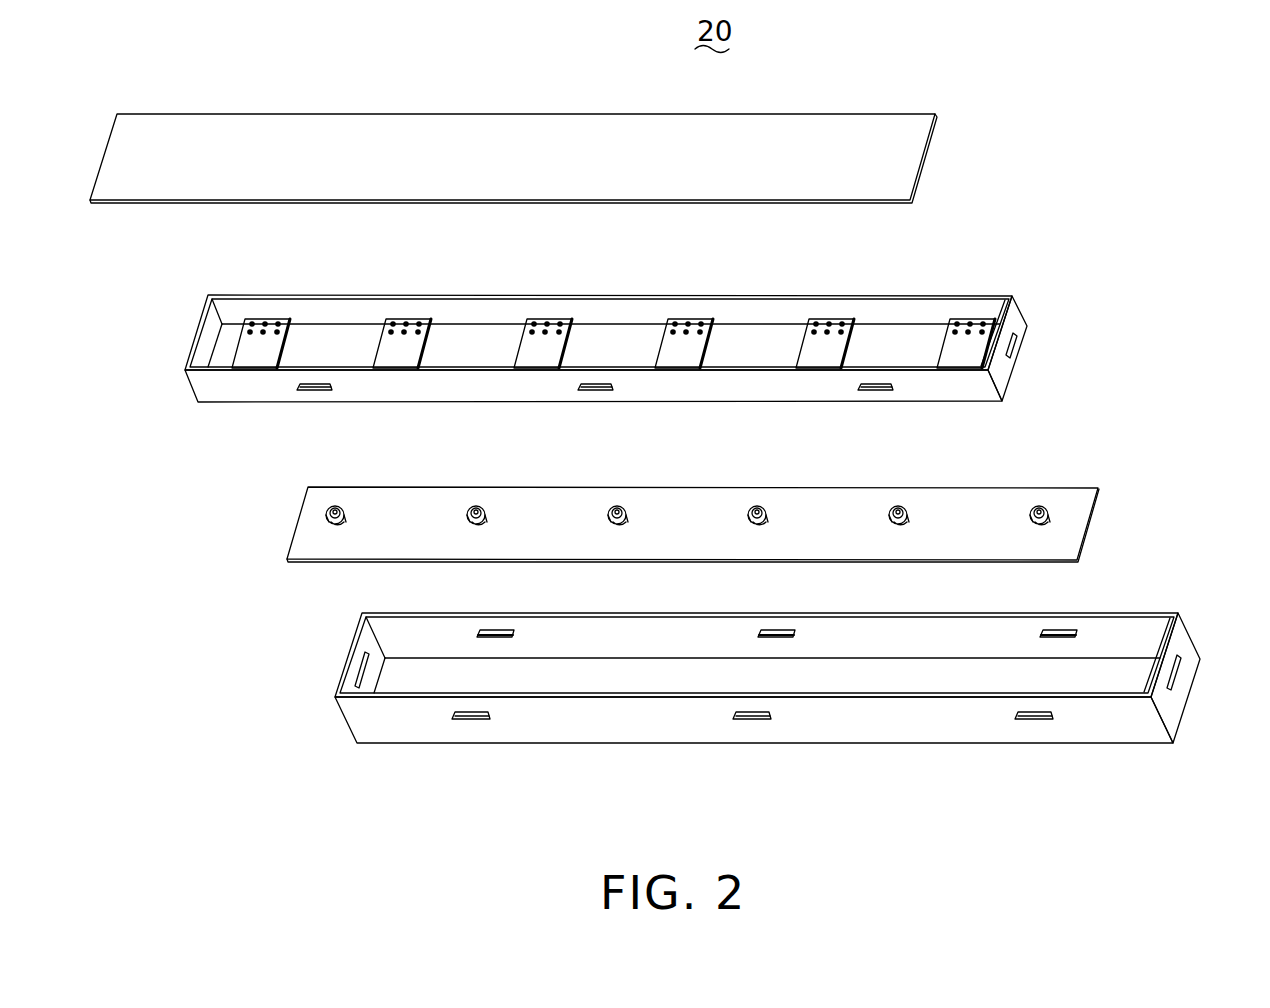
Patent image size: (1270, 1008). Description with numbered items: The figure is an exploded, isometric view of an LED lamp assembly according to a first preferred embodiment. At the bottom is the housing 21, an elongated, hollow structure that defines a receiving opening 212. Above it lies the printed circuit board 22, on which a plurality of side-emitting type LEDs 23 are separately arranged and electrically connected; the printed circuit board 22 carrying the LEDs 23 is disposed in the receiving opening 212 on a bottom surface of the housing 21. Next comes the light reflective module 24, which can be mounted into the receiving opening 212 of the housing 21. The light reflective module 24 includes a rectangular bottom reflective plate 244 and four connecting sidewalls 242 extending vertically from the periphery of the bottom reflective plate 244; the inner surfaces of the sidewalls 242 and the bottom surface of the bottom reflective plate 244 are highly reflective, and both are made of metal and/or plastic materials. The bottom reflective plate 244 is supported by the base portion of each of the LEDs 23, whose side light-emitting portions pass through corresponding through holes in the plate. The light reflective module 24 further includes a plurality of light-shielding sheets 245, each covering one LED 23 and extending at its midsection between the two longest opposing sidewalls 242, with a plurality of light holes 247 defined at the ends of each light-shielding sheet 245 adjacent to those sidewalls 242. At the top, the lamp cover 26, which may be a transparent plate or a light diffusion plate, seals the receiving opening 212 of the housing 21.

The housing 21 is at (802, 654).
The receiving opening 212 is at (1127, 635).
The printed circuit board 22 is at (1067, 503).
The side-emitting type LEDs 23 is at (913, 518).
The light reflective module 24 is at (662, 317).
The connecting sidewalls 242 is at (915, 313).
The bottom reflective plate 244 is at (750, 340).
The light-shielding sheets 245 is at (673, 358).
The light holes 247 is at (545, 320).
The lamp cover 26 is at (865, 170).